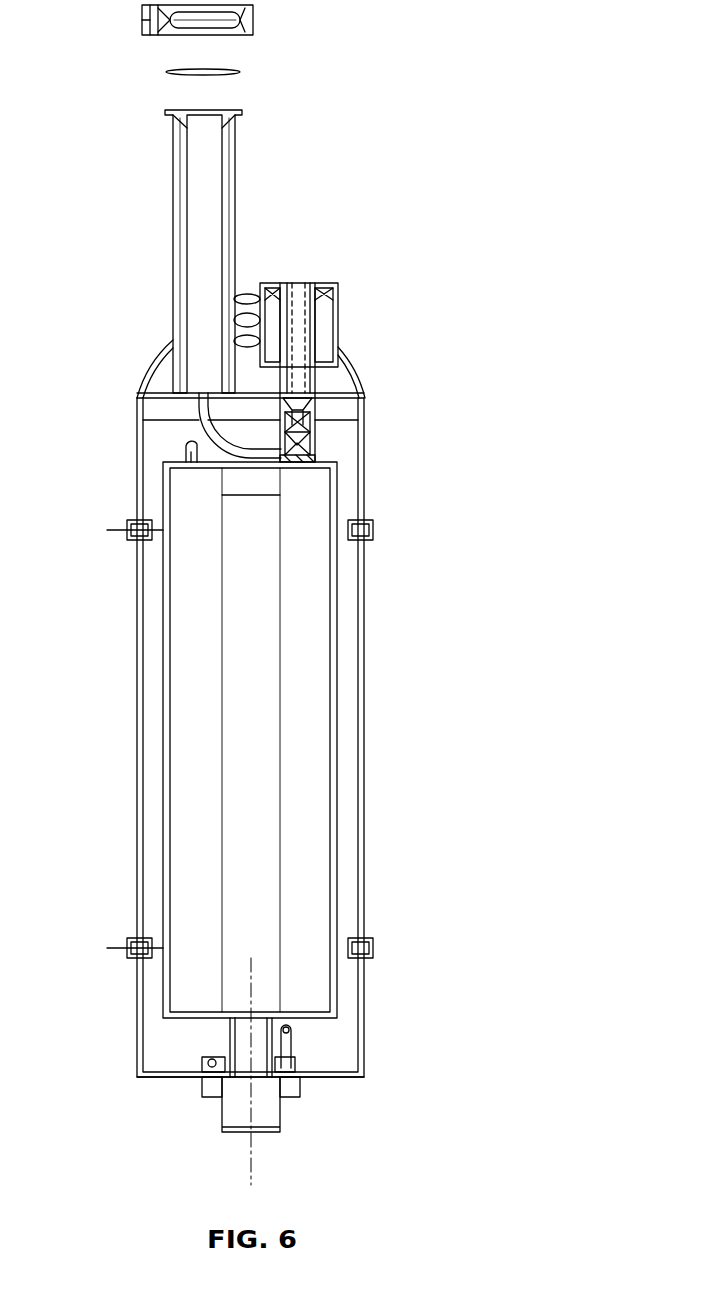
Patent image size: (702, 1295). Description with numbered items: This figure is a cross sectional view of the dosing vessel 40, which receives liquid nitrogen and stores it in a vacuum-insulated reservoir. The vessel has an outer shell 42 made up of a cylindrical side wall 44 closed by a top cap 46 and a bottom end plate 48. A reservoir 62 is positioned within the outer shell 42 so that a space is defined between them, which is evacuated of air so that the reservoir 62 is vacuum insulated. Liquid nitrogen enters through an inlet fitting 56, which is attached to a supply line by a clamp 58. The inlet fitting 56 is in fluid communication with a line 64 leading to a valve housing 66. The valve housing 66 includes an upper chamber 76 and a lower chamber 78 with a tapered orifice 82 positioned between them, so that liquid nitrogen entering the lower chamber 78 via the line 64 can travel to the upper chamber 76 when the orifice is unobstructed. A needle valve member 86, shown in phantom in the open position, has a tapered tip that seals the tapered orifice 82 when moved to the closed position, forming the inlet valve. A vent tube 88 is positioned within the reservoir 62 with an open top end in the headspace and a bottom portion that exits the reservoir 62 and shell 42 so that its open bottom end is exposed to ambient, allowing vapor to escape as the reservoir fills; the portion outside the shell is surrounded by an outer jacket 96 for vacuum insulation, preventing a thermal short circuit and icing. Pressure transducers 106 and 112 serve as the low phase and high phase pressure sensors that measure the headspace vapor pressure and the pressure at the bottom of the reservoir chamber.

The dosing vessel 40 is at (497, 477).
The outer shell 42 is at (120, 672).
The cylindrical side wall 44 is at (367, 628).
The top cap 46 is at (142, 366).
The bottom end plate 48 is at (172, 1078).
The inlet fitting 56 is at (175, 262).
The clamp 58 is at (253, 22).
The reservoir 62 is at (343, 725).
The line 64 is at (200, 423).
The valve housing 66 is at (342, 347).
The upper chamber 76 is at (313, 423).
The lower chamber 78 is at (313, 458).
The tapered orifice 82 is at (338, 318).
The needle valve member 86 is at (325, 285).
The vent tube 88 is at (280, 498).
The outer jacket 96 is at (282, 1113).
The pressure transducer 106 is at (212, 1097).
The pressure transducer 112 is at (302, 1087).